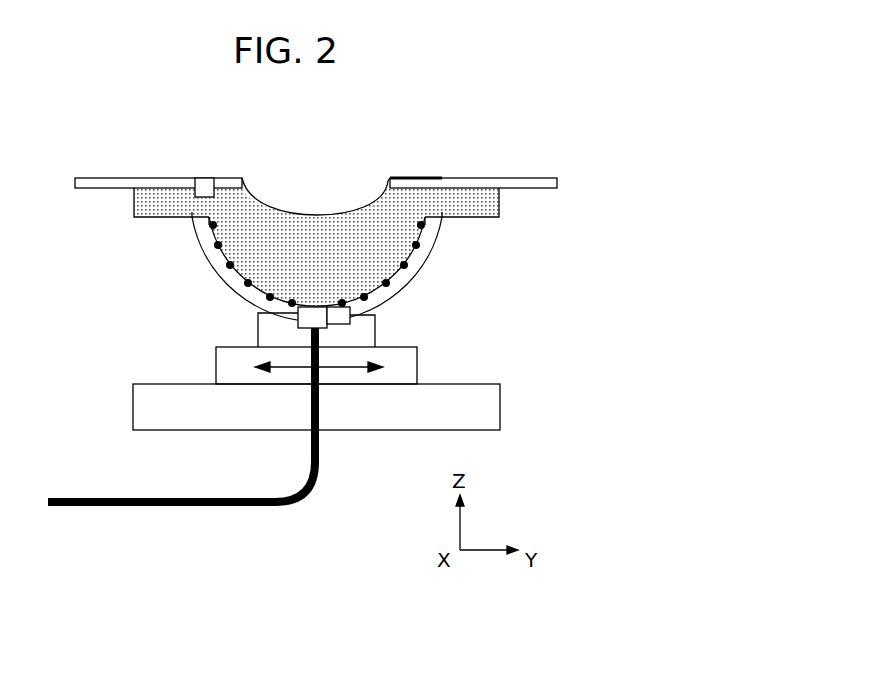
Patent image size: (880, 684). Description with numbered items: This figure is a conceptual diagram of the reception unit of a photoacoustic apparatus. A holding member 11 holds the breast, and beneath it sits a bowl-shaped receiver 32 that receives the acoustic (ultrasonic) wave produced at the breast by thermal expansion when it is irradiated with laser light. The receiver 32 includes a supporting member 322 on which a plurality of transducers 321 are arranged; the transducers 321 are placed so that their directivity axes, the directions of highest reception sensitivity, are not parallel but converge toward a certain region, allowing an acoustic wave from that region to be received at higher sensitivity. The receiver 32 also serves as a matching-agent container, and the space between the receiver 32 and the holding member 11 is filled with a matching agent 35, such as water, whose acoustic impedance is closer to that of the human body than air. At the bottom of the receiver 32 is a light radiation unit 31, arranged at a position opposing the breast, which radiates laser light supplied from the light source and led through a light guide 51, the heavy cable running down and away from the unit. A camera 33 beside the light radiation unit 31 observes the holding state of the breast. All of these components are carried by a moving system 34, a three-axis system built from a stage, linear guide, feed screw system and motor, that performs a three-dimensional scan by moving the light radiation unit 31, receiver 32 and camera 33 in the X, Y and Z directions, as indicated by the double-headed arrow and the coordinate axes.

The holding member 11 is at (315, 213).
The light radiation unit 31 is at (316, 315).
The receiver 32 is at (257, 267).
The transducers 321 is at (212, 226).
The supporting member 322 is at (222, 272).
The camera 33 is at (347, 314).
The moving system 34 is at (403, 357).
The matching agent 35 is at (387, 253).
The light guide 51 is at (148, 507).